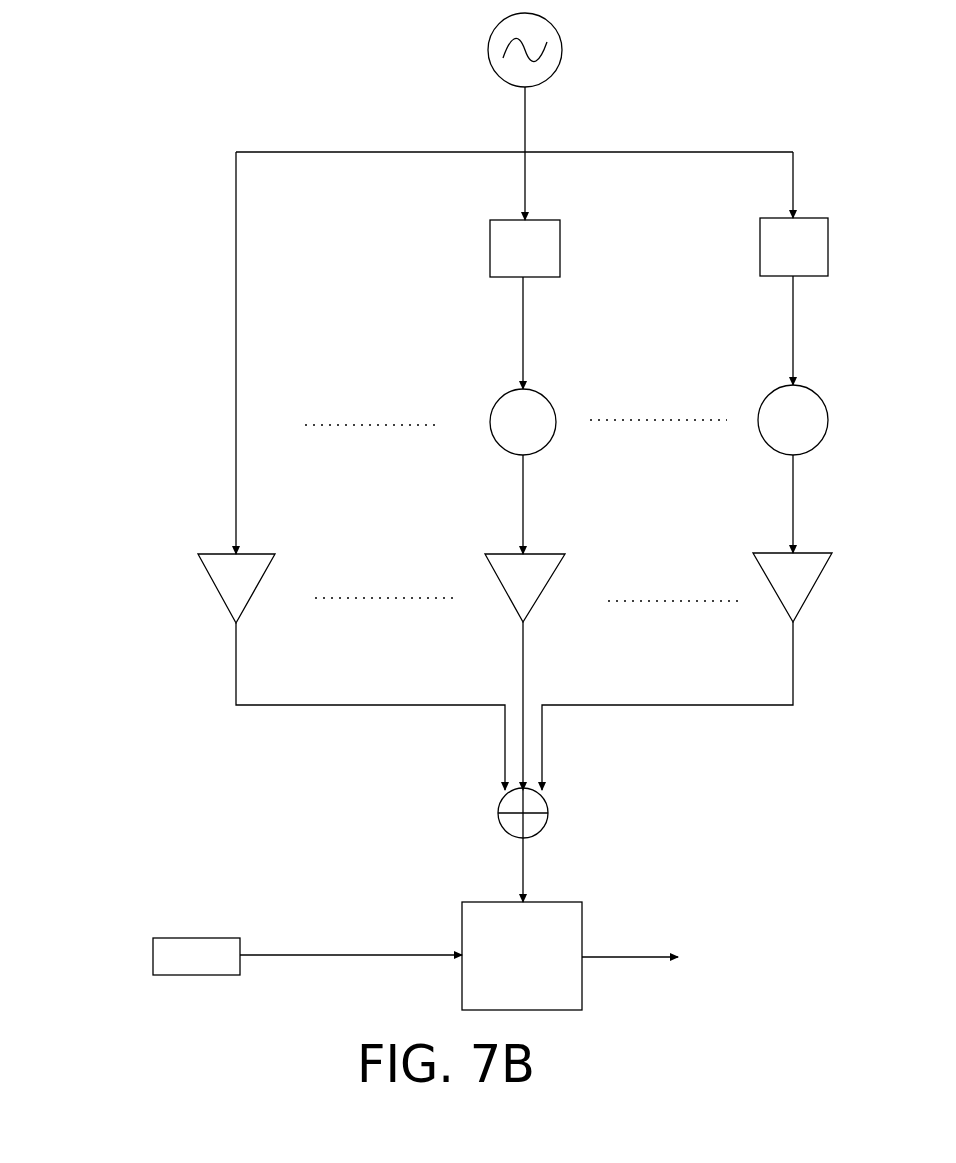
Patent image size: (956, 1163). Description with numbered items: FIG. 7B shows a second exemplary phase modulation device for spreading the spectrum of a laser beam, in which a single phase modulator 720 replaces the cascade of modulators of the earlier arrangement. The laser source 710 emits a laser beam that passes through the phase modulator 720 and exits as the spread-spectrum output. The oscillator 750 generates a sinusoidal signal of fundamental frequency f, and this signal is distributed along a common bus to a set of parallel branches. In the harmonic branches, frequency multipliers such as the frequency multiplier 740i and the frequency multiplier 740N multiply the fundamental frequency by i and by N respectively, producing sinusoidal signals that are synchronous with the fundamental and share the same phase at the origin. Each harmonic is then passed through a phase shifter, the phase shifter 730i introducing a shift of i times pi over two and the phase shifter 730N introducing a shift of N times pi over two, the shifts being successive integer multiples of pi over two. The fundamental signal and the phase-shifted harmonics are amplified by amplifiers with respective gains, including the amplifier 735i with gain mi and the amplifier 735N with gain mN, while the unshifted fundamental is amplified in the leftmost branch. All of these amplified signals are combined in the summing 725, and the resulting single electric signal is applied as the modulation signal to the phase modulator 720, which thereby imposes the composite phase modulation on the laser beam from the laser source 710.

The oscillator 750 is at (488, 50).
The frequency multiplier 740i is at (490, 255).
The frequency multiplier 740N is at (760, 253).
The phase shifter 730i is at (496, 400).
The phase shifter 730N is at (765, 398).
The amplifier 735i is at (490, 568).
The amplifier 735N is at (758, 567).
The summing 725 is at (549, 808).
The phase modulator 720 is at (522, 956).
The laser source 710 is at (176, 938).